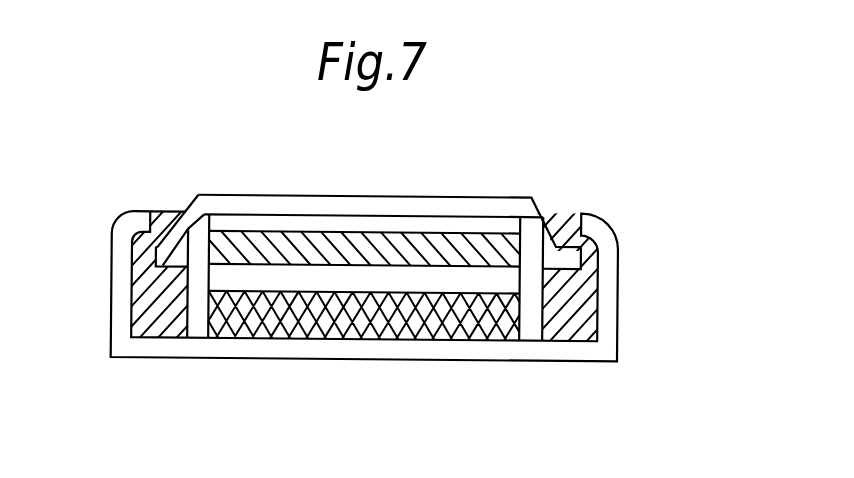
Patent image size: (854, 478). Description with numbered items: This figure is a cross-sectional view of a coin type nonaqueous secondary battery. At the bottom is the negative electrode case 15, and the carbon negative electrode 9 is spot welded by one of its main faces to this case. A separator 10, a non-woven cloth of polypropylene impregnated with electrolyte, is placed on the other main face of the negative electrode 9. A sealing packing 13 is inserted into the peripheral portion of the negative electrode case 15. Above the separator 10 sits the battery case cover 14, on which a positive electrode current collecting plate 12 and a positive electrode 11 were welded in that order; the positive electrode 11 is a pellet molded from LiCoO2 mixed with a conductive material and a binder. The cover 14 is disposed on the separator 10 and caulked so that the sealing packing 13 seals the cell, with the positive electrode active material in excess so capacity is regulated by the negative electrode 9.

The negative electrode 9 is at (500, 320).
The separator 10 is at (480, 282).
The positive electrode 11 is at (525, 242).
The positive electrode current collecting plate 12 is at (502, 227).
The sealing packing 13 is at (163, 212).
The battery case cover 14 is at (363, 198).
The negative electrode case 15 is at (362, 359).